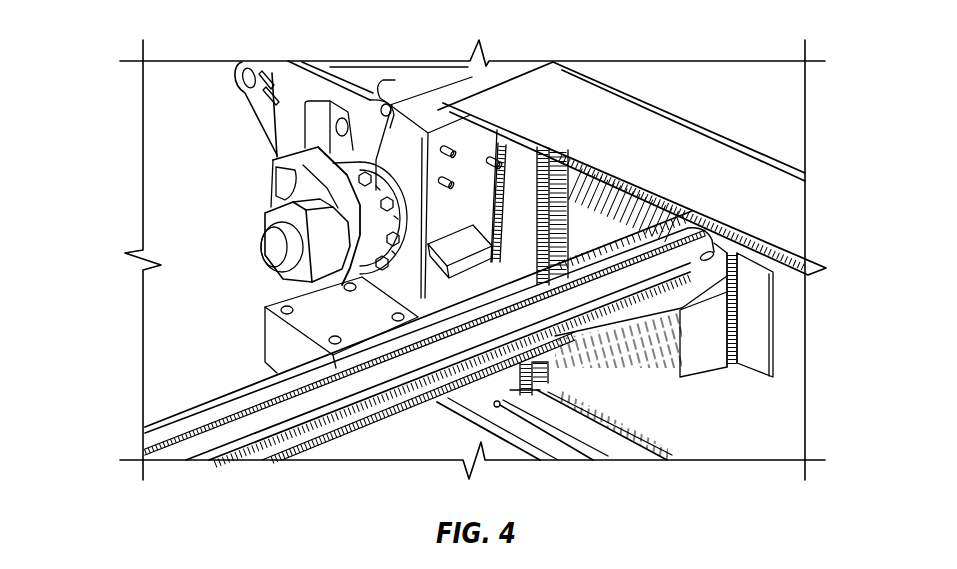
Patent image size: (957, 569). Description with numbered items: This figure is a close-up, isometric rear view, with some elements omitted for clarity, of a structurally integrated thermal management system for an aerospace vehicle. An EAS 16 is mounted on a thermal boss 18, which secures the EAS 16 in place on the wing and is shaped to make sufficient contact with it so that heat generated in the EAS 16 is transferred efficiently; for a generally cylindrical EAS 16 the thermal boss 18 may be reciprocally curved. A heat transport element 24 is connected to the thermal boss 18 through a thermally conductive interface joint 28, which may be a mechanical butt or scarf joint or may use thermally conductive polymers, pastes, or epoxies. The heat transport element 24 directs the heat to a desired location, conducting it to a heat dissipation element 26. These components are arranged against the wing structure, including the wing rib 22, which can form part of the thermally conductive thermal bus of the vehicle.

The EAS 16 is at (258, 185).
The thermal boss 18 is at (422, 113).
The wing rib 22 is at (638, 159).
The heat transport element 24 is at (489, 268).
The heat dissipation element 26 is at (276, 345).
The thermally conductive interface joint 28 is at (453, 233).